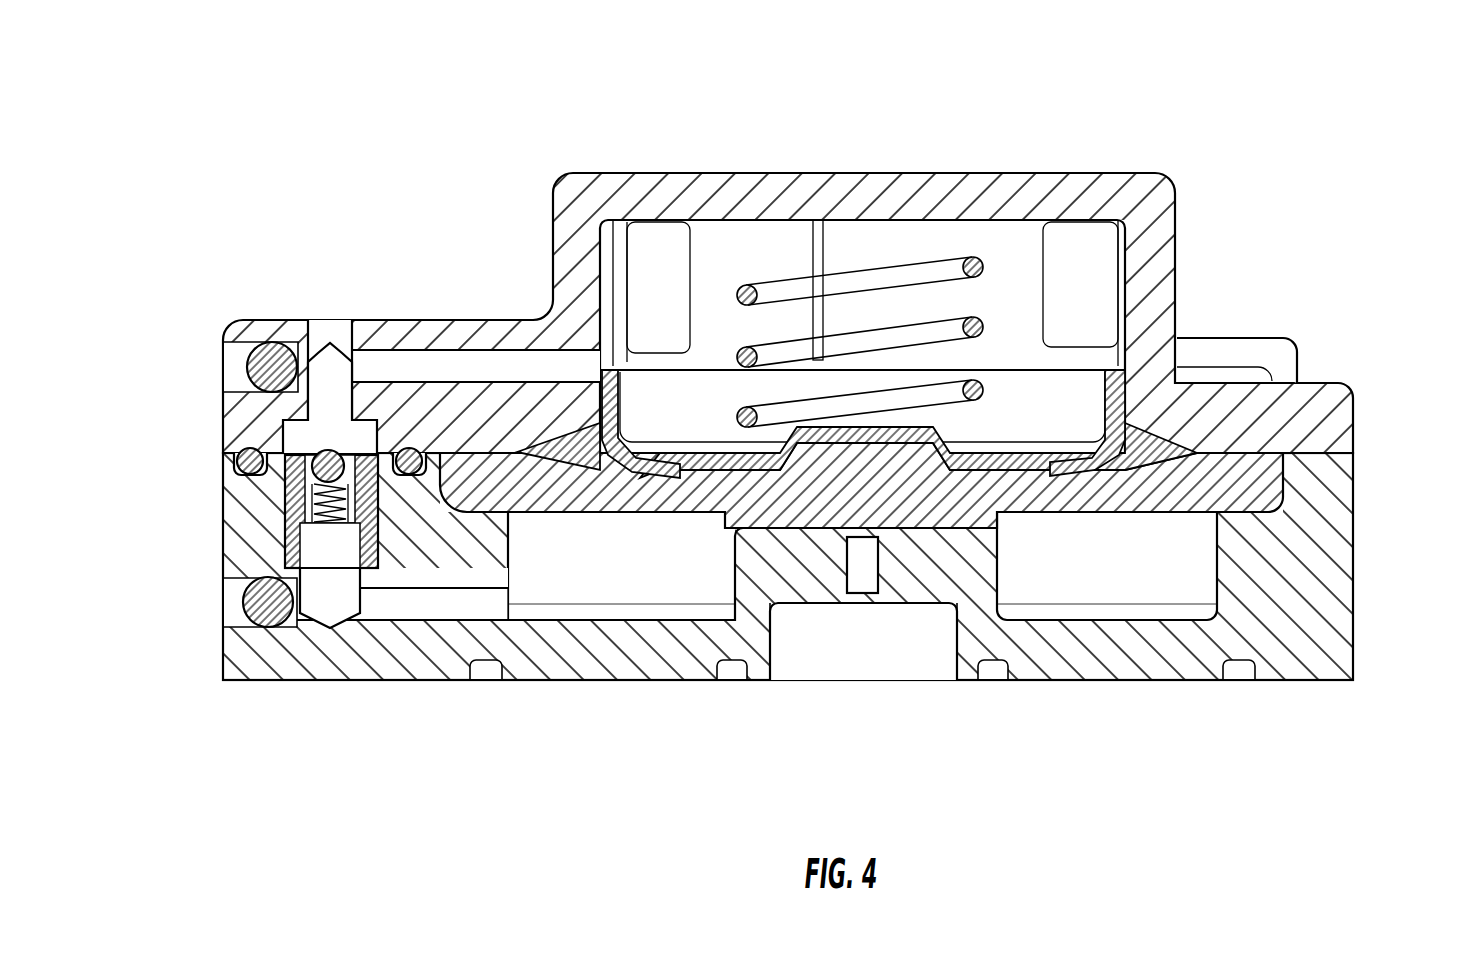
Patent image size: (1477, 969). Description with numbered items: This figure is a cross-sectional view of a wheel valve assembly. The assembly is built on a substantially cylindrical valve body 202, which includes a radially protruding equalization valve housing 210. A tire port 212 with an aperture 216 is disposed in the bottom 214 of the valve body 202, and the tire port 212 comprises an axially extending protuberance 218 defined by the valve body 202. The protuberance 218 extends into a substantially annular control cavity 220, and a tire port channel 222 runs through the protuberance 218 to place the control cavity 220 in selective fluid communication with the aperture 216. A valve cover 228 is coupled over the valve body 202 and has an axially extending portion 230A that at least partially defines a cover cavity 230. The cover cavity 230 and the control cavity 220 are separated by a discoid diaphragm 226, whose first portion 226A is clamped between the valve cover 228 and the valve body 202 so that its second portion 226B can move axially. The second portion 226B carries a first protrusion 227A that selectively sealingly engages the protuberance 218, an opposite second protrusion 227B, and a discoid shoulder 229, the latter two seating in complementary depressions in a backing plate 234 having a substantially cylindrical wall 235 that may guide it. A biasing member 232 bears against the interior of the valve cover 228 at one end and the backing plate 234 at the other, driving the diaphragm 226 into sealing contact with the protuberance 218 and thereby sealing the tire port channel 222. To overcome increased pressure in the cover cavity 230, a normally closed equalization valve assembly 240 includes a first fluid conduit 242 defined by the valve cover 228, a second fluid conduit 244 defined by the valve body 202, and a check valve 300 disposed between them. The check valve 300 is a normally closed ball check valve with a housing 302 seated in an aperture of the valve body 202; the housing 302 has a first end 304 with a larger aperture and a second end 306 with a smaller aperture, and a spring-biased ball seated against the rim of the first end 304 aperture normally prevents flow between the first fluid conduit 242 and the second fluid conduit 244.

The valve body 202 is at (1170, 693).
The equalization valve housing 210 is at (248, 528).
The tire port 212 is at (828, 680).
The bottom 214 is at (1060, 683).
The aperture 216 is at (928, 667).
The protuberance 218 is at (753, 617).
The control cavity 220 is at (610, 585).
The tire port channel 222 is at (868, 585).
The diaphragm 226 is at (460, 450).
The first portion 226A is at (1317, 447).
The second portion 226B is at (1012, 512).
The first protrusion 227A is at (1000, 532).
The second protrusion 227B is at (782, 450).
The valve cover 228 is at (1073, 156).
The shoulder 229 is at (705, 514).
The cover cavity 230 is at (1148, 238).
The axially extending portion 230A is at (1035, 340).
The biasing member 232 is at (777, 277).
The backing plate 234 is at (613, 368).
The wall 235 is at (1117, 392).
The equalization valve assembly 240 is at (232, 434).
The first fluid conduit 242 is at (490, 367).
The second fluid conduit 244 is at (442, 608).
The check valve 300 is at (240, 495).
The housing 302 is at (297, 548).
The first end 304 is at (378, 558).
The second end 306 is at (278, 450).